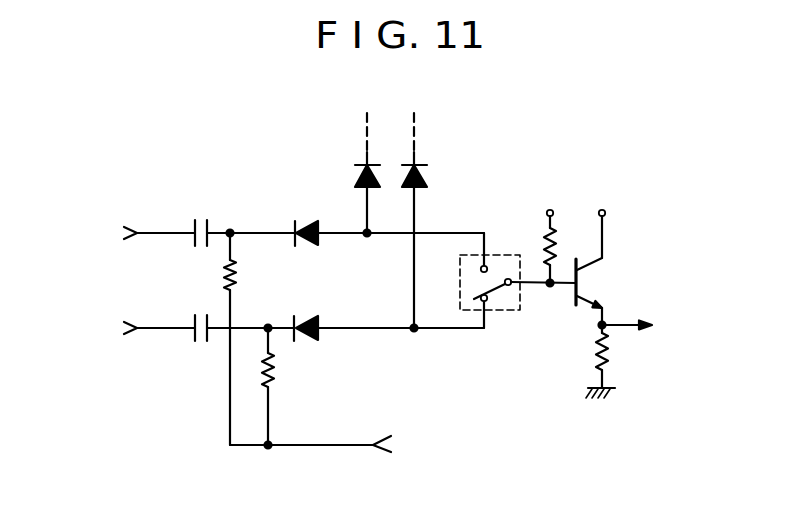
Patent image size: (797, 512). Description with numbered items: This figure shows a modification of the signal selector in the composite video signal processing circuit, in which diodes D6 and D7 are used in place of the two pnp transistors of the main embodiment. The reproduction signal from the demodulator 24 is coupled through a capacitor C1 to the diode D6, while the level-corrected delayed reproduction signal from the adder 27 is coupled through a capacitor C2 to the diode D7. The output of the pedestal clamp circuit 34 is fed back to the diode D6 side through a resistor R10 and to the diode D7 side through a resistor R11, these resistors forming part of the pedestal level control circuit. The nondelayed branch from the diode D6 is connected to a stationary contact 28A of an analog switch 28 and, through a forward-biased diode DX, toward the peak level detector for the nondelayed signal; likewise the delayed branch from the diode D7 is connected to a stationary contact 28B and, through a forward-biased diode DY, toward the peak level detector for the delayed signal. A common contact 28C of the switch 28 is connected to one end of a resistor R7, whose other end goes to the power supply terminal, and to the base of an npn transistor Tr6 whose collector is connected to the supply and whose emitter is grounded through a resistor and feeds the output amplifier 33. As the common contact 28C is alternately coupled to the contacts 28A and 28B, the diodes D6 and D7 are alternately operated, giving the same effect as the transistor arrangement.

The capacitor C2 is at (206, 216).
The capacitor C1 is at (199, 315).
The resistor R11 is at (240, 281).
The resistor R10 is at (277, 373).
The diode D7 is at (311, 222).
The diode D6 is at (303, 318).
The diode DY is at (355, 175).
The diode DX is at (426, 175).
The analog switch 28 is at (495, 251).
The stationary contact 28A is at (470, 310).
The stationary contact 28B is at (468, 270).
The common contact 28C is at (503, 291).
The resistor R7 is at (557, 248).
The npn transistor Tr6 is at (588, 287).
The adder 27 is at (121, 244).
The demodulator 24 is at (135, 353).
The output amplifier 33 is at (672, 338).
The pedestal clamp circuit 34 is at (395, 453).